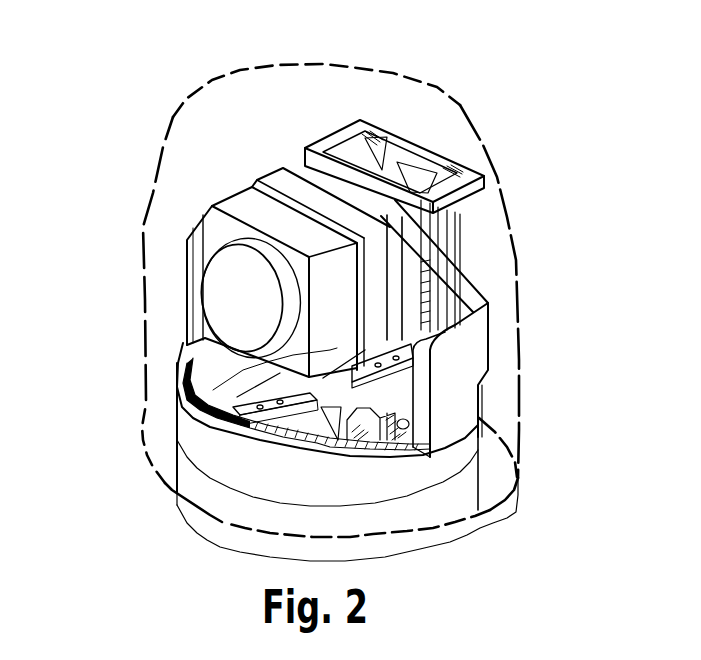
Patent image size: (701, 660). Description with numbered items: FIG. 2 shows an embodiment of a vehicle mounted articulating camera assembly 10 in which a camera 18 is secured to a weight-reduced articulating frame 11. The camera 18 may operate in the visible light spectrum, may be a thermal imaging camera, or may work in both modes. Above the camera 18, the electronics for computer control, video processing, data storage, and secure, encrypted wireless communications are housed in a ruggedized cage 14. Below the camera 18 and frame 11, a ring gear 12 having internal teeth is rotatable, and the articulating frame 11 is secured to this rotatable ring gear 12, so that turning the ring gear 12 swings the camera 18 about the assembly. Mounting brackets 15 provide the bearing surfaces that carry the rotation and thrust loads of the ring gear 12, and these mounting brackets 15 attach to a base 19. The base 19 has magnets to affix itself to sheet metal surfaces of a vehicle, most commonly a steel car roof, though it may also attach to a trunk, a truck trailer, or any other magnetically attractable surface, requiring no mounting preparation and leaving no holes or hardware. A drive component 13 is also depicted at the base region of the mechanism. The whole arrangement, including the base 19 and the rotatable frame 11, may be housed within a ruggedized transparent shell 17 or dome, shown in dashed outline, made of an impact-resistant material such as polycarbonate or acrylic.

The vehicle mounted articulating camera assembly 10 is at (128, 86).
The articulating frame 11 is at (462, 278).
The ring gear 12 is at (187, 367).
The drive unit 13 is at (405, 410).
The ruggedized cage 14 is at (472, 167).
The mounting brackets 15 is at (164, 396).
The transparent shell 17 is at (366, 60).
The camera 18 is at (244, 204).
The base 19 is at (177, 511).